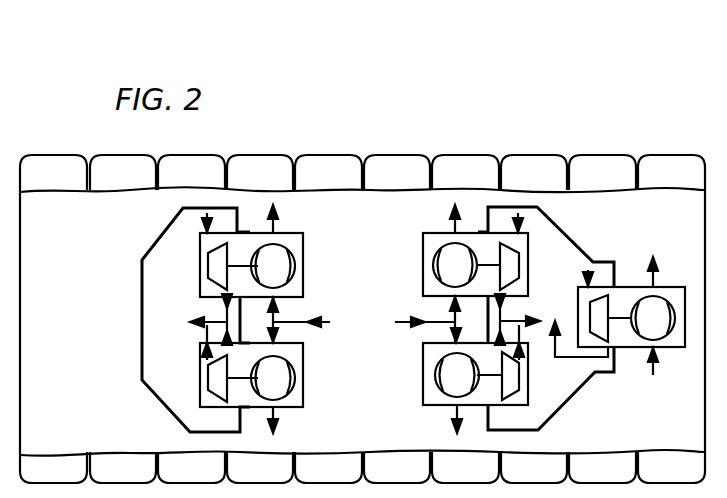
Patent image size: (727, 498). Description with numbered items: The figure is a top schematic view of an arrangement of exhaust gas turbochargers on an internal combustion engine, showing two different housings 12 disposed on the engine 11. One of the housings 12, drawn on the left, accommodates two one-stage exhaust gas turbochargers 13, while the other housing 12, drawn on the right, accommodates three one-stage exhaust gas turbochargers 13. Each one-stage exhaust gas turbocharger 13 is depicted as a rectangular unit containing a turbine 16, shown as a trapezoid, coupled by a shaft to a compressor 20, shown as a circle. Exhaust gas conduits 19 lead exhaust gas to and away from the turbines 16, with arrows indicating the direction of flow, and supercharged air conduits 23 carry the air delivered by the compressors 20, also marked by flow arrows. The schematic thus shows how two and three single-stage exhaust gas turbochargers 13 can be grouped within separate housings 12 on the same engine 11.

The engine 11 is at (80, 221).
The housing 12 is at (167, 411).
The one-stage exhaust gas turbocharger 13 is at (422, 283).
The turbine 16 is at (212, 262).
The exhaust gas conduit 19 is at (222, 320).
The compressor 20 is at (428, 258).
The supercharged air conduit 23 is at (281, 214).